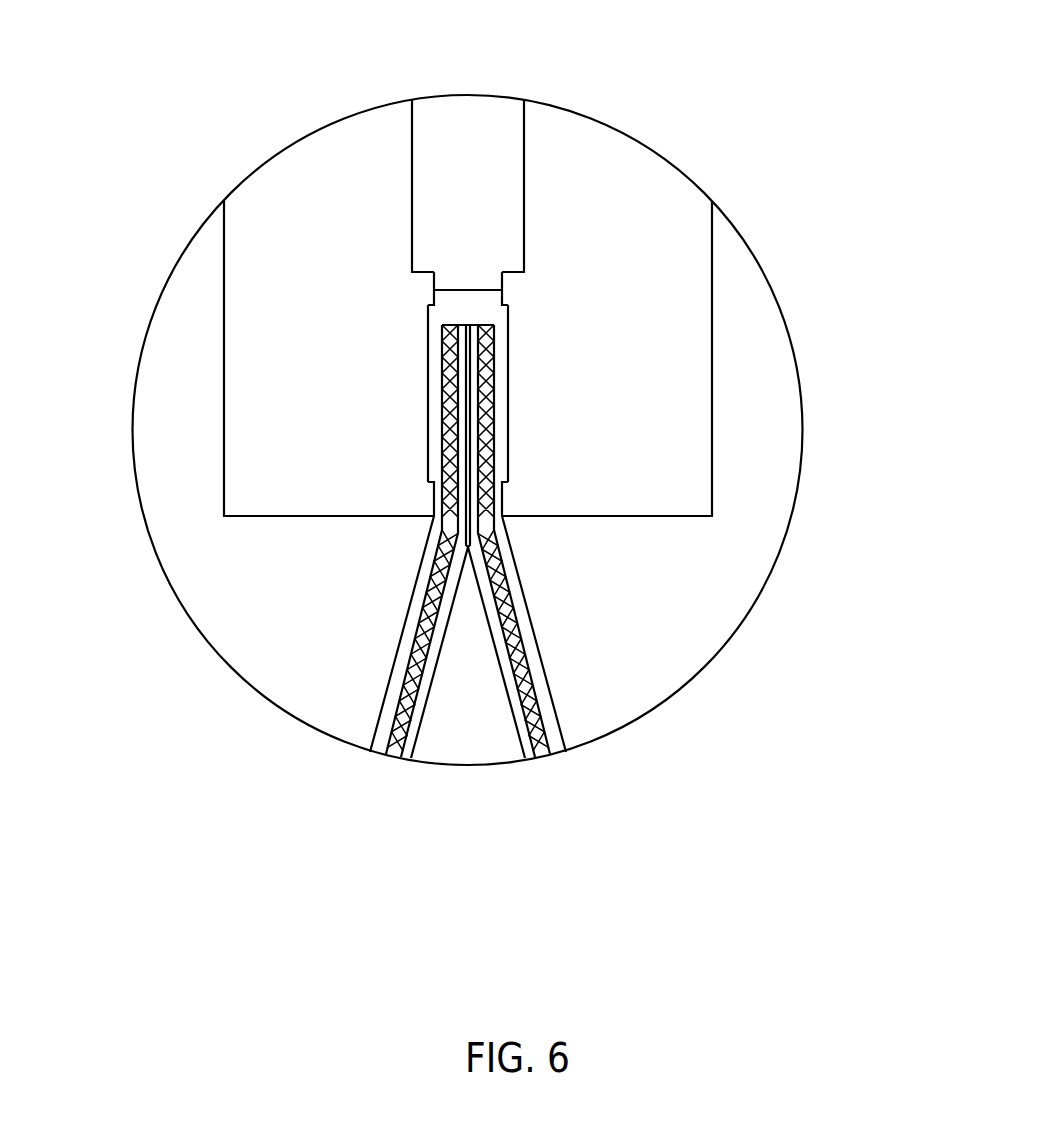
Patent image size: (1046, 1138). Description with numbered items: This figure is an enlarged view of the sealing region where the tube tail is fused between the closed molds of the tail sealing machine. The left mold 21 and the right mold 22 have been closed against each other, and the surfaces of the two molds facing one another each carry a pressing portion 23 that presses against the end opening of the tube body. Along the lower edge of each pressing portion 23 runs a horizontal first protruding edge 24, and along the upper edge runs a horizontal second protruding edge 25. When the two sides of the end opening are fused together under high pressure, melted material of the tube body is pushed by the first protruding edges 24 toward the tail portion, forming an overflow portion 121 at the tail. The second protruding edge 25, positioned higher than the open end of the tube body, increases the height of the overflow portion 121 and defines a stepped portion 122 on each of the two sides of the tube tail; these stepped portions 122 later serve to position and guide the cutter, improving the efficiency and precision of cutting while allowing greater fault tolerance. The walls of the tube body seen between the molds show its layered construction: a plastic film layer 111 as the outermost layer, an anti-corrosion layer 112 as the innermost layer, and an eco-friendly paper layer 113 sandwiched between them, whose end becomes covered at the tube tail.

The left mold 21 is at (308, 197).
The right mold 22 is at (648, 283).
The pressing portion 23 is at (423, 396).
The first protruding edge 24 is at (430, 498).
The second protruding edge 25 is at (430, 298).
The overflow portion 121 is at (470, 312).
The stepped portion 122 is at (503, 312).
The plastic film layer 111 is at (390, 703).
The anti-corrosion layer 112 is at (410, 733).
The eco-friendly paper layer 113 is at (392, 737).